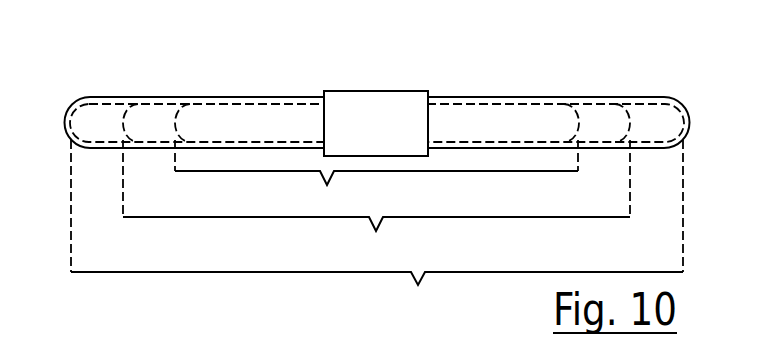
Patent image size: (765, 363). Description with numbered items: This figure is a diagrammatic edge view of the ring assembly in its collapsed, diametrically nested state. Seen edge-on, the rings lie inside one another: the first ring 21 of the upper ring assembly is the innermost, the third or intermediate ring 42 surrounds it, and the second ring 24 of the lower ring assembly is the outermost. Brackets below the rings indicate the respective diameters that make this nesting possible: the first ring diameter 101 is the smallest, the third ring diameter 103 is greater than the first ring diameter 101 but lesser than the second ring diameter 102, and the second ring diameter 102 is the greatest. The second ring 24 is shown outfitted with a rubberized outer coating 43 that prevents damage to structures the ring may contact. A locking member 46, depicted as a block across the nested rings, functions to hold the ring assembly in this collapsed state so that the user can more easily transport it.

The rubberized outer coating 43 is at (65, 122).
The second ring 24 is at (667, 112).
The third ring 42 is at (605, 112).
The first ring 21 is at (552, 113).
The locking member 46 is at (377, 100).
The first ring diameter 101 is at (376, 175).
The third ring diameter 103 is at (376, 197).
The second ring diameter 102 is at (377, 225).